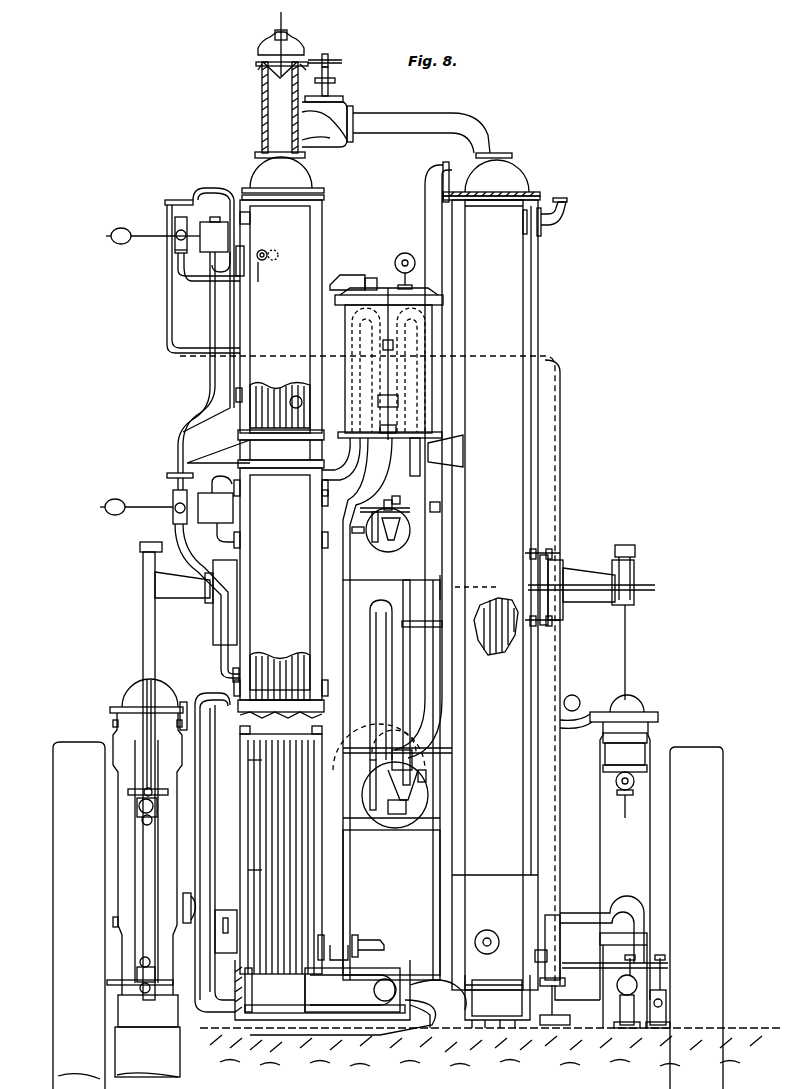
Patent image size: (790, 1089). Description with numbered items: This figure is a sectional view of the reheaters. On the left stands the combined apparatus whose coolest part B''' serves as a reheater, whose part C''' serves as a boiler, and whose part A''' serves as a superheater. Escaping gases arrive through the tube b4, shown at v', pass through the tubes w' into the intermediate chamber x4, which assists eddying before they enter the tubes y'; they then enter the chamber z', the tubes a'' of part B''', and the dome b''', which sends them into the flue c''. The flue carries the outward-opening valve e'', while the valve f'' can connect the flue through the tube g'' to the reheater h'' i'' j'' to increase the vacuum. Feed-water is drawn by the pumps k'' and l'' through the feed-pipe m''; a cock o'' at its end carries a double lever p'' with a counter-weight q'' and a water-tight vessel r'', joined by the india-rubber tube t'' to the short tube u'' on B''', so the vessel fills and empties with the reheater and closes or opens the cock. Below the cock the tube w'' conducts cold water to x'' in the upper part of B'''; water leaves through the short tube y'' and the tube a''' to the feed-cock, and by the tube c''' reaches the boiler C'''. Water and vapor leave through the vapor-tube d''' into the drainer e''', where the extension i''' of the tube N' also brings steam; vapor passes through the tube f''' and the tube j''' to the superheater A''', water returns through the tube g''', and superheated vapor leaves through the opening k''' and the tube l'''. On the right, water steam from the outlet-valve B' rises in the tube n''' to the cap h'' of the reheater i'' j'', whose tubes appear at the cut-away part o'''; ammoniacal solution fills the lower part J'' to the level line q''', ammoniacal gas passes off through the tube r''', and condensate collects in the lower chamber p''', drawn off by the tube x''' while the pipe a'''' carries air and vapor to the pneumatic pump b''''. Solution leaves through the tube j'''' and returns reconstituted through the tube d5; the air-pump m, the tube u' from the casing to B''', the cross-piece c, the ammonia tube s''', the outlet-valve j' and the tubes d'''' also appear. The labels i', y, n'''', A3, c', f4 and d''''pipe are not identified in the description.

The flue c'' is at (281, 85).
The valve e'' is at (280, 77).
The valve f'' is at (327, 100).
The tube g'' is at (432, 135).
The cap h'' is at (491, 180).
The tube n''' is at (423, 460).
The reheater i'' is at (495, 595).
The reheater J'' is at (495, 892).
The tube r''' is at (545, 224).
The feed-pipe m'' is at (373, 600).
The dome b''' is at (283, 178).
The reheater B''' is at (281, 316).
The cold-water inlet x'' is at (259, 233).
The tube u' is at (280, 241).
The short tube u'' is at (247, 210).
The tube w'' is at (260, 264).
The india-rubber tube t'' is at (221, 290).
The counter-weight q'' is at (137, 247).
The double lever p'' is at (194, 243).
The water-tight vessel r'' is at (214, 234).
The cock o'' is at (163, 258).
The reheater j'' is at (206, 277).
The vapor-tube d''' is at (385, 345).
The tubes a'' is at (280, 397).
The opening i' is at (305, 399).
The fitting y is at (242, 387).
The chamber z' is at (281, 449).
The tube c''' is at (281, 584).
The tubes y' is at (281, 665).
The intermediate chamber x4 is at (281, 718).
The superheater A''' is at (281, 854).
The opening k''' is at (246, 765).
The tubes w' is at (246, 873).
The tube s''' is at (388, 364).
The extension tube i''' is at (430, 331).
The drainer e''' is at (389, 386).
The tube N' is at (427, 459).
The tube g''' is at (357, 509).
The tubes d'''' is at (334, 487).
The outlet-valve j' is at (396, 530).
The tube f''' is at (391, 780).
The tube n'''' is at (390, 682).
The level line q''' is at (480, 583).
The cut-away part o''' is at (496, 636).
The outlet-valve B' is at (397, 788).
The tube l''' is at (379, 740).
The chamber A3 is at (391, 902).
The tube a''' is at (208, 371).
The tube b4 is at (173, 514).
The boiler C''' is at (207, 579).
The cross-piece c is at (191, 771).
The fitting c' is at (560, 587).
The pneumatic pump b'''' is at (120, 884).
The pipe a'''' is at (218, 868).
The tube d5 is at (599, 622).
The air-pump m is at (609, 847).
The short tube y'' is at (560, 970).
The tube x''' is at (601, 957).
The pump k'' is at (619, 991).
The pump l'' is at (668, 991).
The tube v' is at (322, 990).
The pipe end f4 is at (385, 990).
The lower chamber p''' is at (497, 1001).
The tube j''' is at (351, 934).
The tube j'''' is at (485, 933).
The drain pipe d''''pipe is at (358, 1007).